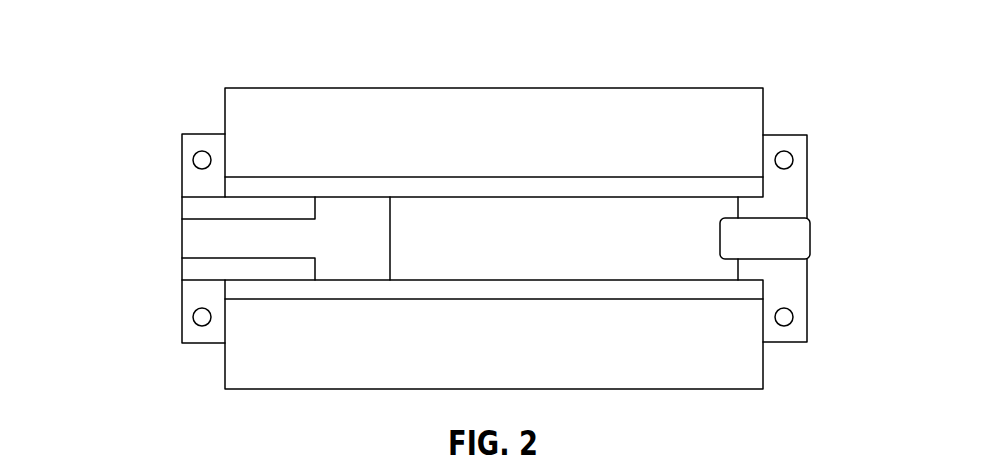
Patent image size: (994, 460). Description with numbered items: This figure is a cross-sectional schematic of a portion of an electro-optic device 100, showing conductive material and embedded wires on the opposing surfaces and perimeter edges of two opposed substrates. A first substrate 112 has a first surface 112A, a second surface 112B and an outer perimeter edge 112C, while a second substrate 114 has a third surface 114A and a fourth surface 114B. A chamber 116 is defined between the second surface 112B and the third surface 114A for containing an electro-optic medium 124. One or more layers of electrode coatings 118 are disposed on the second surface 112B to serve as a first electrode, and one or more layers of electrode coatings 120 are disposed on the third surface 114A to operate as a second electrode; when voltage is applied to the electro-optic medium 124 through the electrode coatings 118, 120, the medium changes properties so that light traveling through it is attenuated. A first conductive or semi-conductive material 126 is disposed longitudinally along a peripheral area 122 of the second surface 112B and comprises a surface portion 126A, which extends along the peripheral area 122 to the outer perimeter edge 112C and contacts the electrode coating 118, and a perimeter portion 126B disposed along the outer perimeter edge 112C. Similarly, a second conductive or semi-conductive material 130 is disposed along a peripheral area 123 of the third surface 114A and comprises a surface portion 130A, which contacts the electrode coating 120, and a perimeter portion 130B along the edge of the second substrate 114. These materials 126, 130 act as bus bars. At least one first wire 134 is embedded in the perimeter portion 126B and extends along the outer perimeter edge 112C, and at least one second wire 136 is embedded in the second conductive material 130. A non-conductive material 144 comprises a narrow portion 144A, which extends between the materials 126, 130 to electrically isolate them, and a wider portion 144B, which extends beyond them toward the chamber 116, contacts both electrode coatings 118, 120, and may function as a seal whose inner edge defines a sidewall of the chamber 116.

The electro-optic device 100 is at (146, 50).
The first substrate 112 is at (237, 108).
The first surface 112A is at (415, 86).
The second surface 112B is at (490, 177).
The outer perimeter edge 112C is at (763, 110).
The second substrate 114 is at (230, 372).
The third surface 114A is at (625, 300).
The fourth surface 114B is at (708, 390).
The chamber 116 is at (543, 232).
The electrode coatings 118 is at (232, 191).
The electrode coatings 120 is at (230, 288).
The peripheral area 122 is at (740, 177).
The peripheral area 123 is at (747, 300).
The electro-optic medium 124 is at (628, 232).
The first conductive or semi-conductive material 126 is at (192, 177).
The surface portion 126A is at (273, 207).
The perimeter portion 126B is at (193, 145).
The second conductive or semi-conductive material 130 is at (188, 303).
The surface portion 130A is at (265, 268).
The perimeter portion 130B is at (188, 335).
The first wire 134 is at (213, 157).
The second wire 136 is at (211, 318).
The non-conductive material 144 is at (362, 207).
The narrow portion 144A is at (207, 243).
The wider portion 144B is at (352, 258).